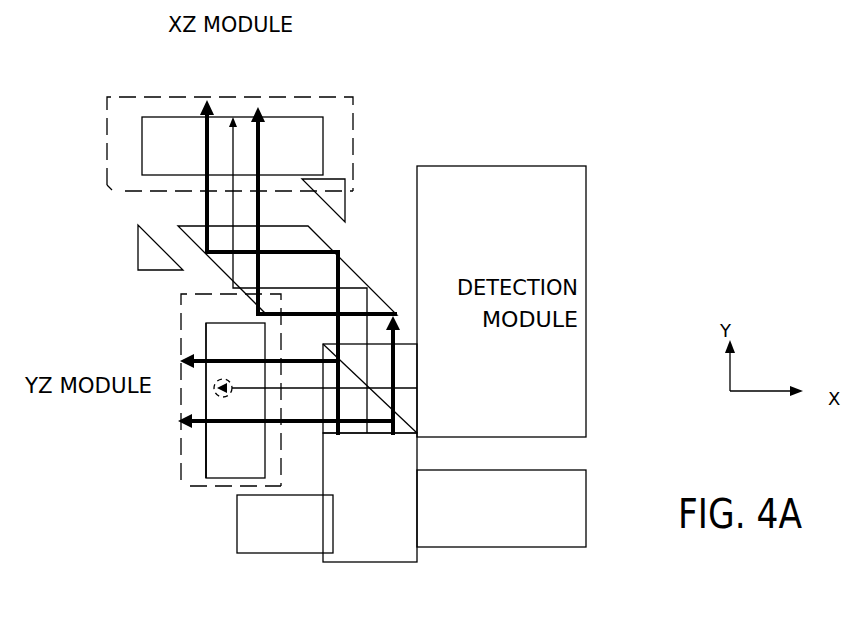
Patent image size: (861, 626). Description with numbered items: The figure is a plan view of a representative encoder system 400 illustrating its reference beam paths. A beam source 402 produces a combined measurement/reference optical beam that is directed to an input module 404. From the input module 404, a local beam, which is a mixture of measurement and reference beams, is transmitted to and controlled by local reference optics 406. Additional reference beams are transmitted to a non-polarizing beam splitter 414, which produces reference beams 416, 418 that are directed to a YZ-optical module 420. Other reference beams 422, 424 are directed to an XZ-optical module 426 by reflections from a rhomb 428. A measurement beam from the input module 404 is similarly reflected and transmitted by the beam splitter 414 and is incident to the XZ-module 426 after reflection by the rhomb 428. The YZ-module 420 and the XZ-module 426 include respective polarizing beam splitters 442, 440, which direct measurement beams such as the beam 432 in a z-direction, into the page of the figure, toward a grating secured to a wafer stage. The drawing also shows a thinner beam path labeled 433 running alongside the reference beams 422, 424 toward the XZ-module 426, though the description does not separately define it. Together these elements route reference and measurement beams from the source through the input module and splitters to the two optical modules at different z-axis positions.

The encoder system 400 is at (428, 108).
The beam source 402 is at (587, 475).
The input module 404 is at (415, 563).
The local reference optics 406 is at (237, 547).
The non-polarizing beam splitter 414 is at (410, 393).
The reference beam 416 is at (205, 357).
The reference beam 418 is at (215, 423).
The YZ-optical module 420 is at (181, 486).
The reference beam 422 is at (205, 147).
The reference beam 424 is at (263, 135).
The XZ-optical module 426 is at (107, 185).
The rhomb 428 is at (328, 288).
The measurement beam 432 is at (280, 392).
The thin beam 433 is at (233, 150).
The polarizing beam splitter 440 is at (312, 162).
The polarizing beam splitter 442 is at (252, 464).